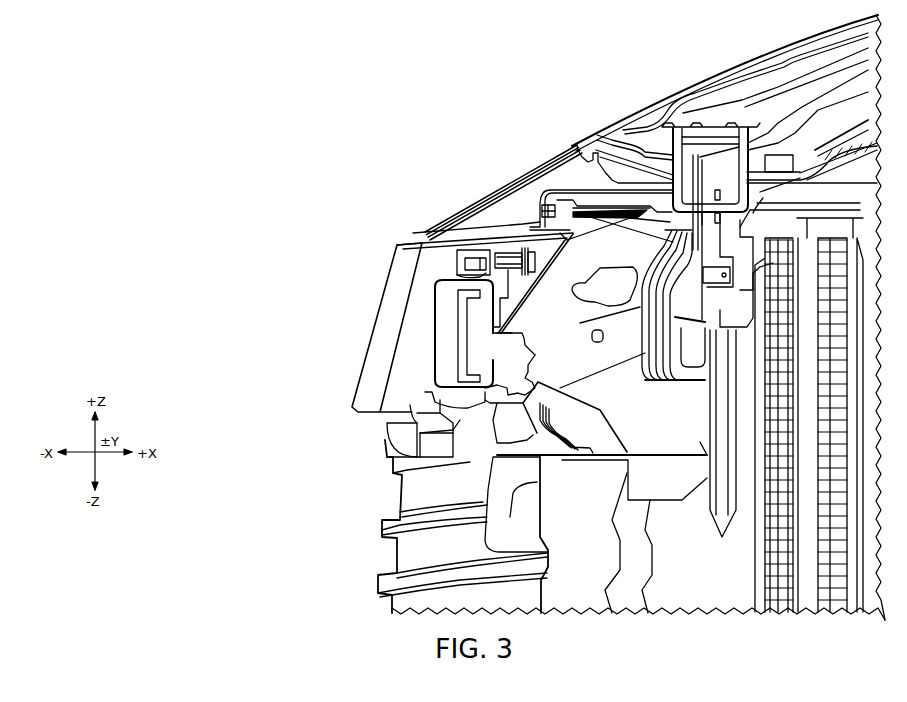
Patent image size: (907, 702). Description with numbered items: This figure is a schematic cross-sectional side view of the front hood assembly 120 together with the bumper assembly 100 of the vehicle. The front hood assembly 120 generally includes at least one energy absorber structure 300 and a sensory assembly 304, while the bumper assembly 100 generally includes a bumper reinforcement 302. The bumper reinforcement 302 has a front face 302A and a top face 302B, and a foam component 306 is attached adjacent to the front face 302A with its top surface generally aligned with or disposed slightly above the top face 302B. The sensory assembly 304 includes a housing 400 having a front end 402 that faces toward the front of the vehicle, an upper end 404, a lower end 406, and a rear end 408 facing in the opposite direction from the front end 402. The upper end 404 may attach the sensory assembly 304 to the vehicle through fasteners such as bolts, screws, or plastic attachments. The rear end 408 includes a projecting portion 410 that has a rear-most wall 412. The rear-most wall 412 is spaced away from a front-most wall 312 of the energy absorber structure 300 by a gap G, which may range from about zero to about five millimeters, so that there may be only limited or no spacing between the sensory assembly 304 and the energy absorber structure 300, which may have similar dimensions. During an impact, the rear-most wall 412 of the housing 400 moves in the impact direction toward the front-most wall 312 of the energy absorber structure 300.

The bumper assembly 100 is at (332, 501).
The front hood assembly 120 is at (652, 93).
The energy absorber structure 300 is at (579, 394).
The bumper reinforcement 302 is at (650, 455).
The front face 302A is at (516, 504).
The top face 302B is at (703, 453).
The sensory assembly 304 is at (428, 358).
The foam component 306 is at (503, 478).
The front-most wall 312 is at (523, 402).
The housing 400 is at (430, 284).
The front end 402 is at (428, 300).
The upper end 404 is at (462, 250).
The lower end 406 is at (430, 410).
The rear end 408 is at (527, 320).
The projecting portion 410 is at (513, 355).
The rear-most wall 412 is at (514, 373).
The gap G is at (541, 386).